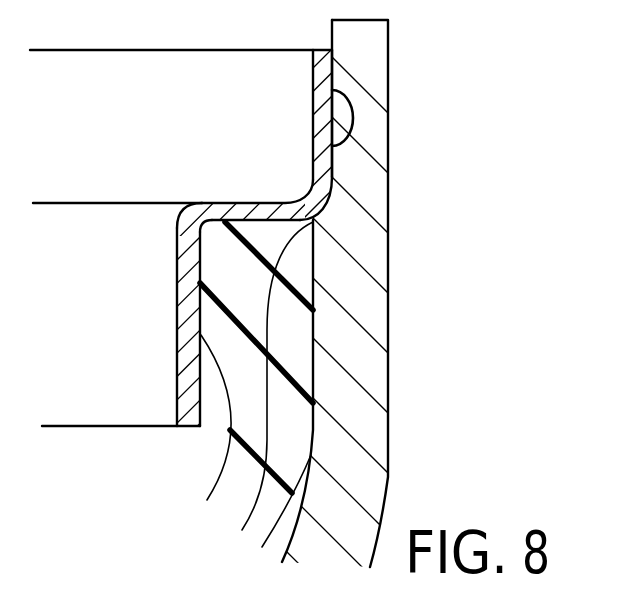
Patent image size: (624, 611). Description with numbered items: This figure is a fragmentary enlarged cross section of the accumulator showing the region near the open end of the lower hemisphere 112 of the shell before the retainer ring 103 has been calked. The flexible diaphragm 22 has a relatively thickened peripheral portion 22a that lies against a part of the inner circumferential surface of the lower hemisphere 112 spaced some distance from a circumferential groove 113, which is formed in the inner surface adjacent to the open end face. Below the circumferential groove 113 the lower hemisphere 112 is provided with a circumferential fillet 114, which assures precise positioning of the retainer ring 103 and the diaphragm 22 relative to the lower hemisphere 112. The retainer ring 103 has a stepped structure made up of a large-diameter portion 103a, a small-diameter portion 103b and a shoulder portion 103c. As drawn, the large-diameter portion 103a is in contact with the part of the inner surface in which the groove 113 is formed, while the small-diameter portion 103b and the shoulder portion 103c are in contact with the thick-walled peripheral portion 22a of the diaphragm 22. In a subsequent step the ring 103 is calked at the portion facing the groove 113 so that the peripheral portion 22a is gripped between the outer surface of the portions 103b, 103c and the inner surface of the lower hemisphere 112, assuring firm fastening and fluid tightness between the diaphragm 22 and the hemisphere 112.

The flexible diaphragm 22 is at (248, 404).
The peripheral portion 22a is at (223, 253).
The retainer ring 103 is at (311, 305).
The large-diameter portion 103a is at (323, 100).
The small-diameter portion 103b is at (190, 332).
The shoulder portion 103c is at (247, 213).
The lower hemisphere 112 is at (358, 483).
The circumferential groove 113 is at (340, 118).
The circumferential fillet 114 is at (313, 210).